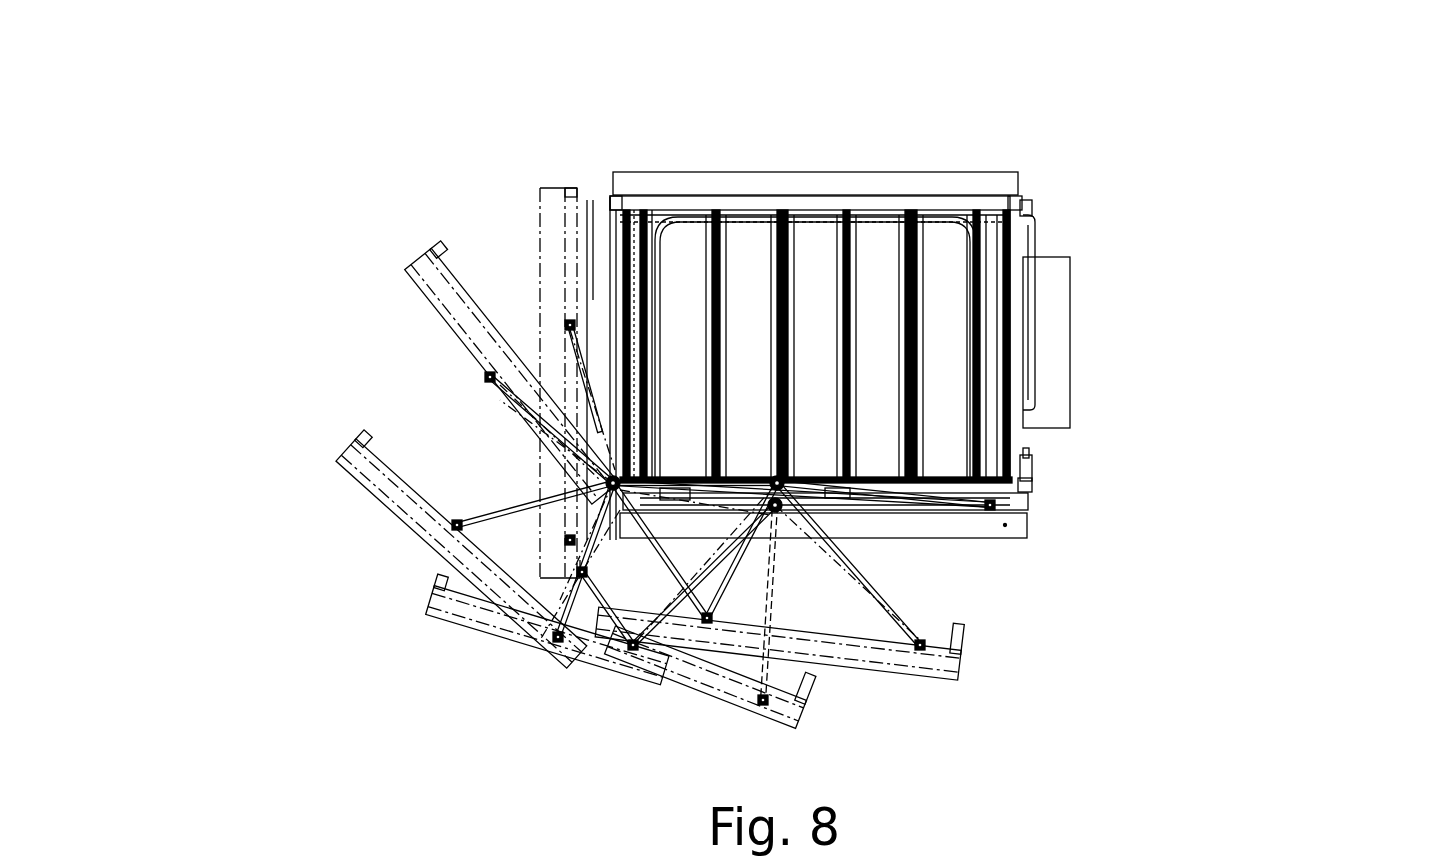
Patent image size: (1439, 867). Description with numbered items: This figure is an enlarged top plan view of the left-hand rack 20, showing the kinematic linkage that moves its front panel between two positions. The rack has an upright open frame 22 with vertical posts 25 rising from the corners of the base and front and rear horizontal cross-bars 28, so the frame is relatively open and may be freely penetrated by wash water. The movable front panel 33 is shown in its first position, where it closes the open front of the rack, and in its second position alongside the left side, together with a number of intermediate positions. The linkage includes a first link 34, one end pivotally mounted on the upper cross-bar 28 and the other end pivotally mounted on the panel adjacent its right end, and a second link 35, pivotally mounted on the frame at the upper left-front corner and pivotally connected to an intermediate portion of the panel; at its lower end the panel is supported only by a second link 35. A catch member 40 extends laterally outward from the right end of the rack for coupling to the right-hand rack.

The left-hand rack 20 is at (832, 103).
The upright open frame 22 is at (1020, 185).
The vertical posts 25 is at (608, 194).
The front and rear horizontal cross-bars 28 is at (785, 430).
The movable front panel 33 is at (1005, 545).
The first link 34 is at (875, 505).
The second link 35 is at (650, 470).
The catch member 40 is at (1075, 323).